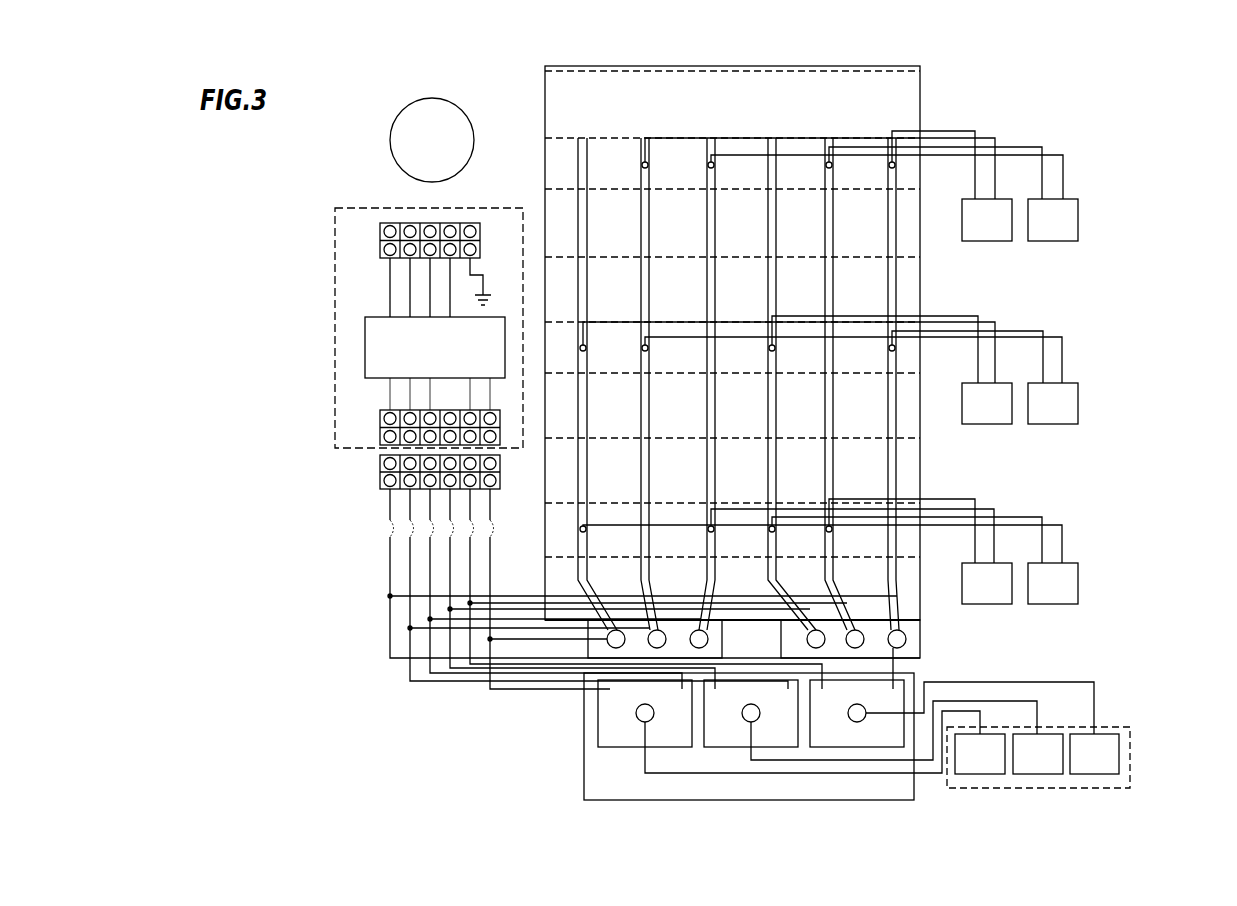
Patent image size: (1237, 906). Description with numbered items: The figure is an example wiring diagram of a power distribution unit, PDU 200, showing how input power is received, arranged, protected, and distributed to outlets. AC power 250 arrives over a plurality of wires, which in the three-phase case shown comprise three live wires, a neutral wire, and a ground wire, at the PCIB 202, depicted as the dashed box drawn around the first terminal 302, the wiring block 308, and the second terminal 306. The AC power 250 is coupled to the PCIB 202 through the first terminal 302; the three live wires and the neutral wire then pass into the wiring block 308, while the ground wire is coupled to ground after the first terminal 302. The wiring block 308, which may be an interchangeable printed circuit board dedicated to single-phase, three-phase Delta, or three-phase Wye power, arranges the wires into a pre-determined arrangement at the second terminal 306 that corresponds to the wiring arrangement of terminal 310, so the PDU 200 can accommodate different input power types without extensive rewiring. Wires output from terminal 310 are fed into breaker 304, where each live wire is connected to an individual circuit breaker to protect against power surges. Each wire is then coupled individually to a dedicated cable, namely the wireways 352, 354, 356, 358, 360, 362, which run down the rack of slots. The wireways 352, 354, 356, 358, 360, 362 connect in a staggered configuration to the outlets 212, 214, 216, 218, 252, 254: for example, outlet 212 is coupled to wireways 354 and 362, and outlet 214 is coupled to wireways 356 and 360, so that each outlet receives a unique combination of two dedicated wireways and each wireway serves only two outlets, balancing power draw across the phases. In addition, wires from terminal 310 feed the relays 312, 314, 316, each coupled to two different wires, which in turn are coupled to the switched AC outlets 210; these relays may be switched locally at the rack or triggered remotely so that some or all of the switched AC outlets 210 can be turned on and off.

The PDU 200 is at (973, 103).
The PCIB 202 is at (333, 335).
The switched AC outlets 210 is at (1132, 753).
The outlet 212 is at (975, 232).
The outlet 214 is at (1041, 232).
The outlet 216 is at (975, 416).
The outlet 218 is at (1041, 416).
The AC power 250 is at (393, 112).
The outlet 252 is at (975, 596).
The outlet 254 is at (1041, 596).
The first terminal 302 is at (377, 227).
The breaker 304 is at (378, 538).
The second terminal 306 is at (380, 417).
The wiring block 308 is at (365, 352).
The terminal 310 is at (378, 479).
The relay 312 is at (597, 729).
The relay 314 is at (723, 747).
The relay 316 is at (833, 747).
The wireway 352 is at (576, 186).
The wireway 354 is at (639, 186).
The wireway 356 is at (698, 184).
The wireway 358 is at (764, 186).
The wireway 360 is at (821, 186).
The wireway 362 is at (879, 186).